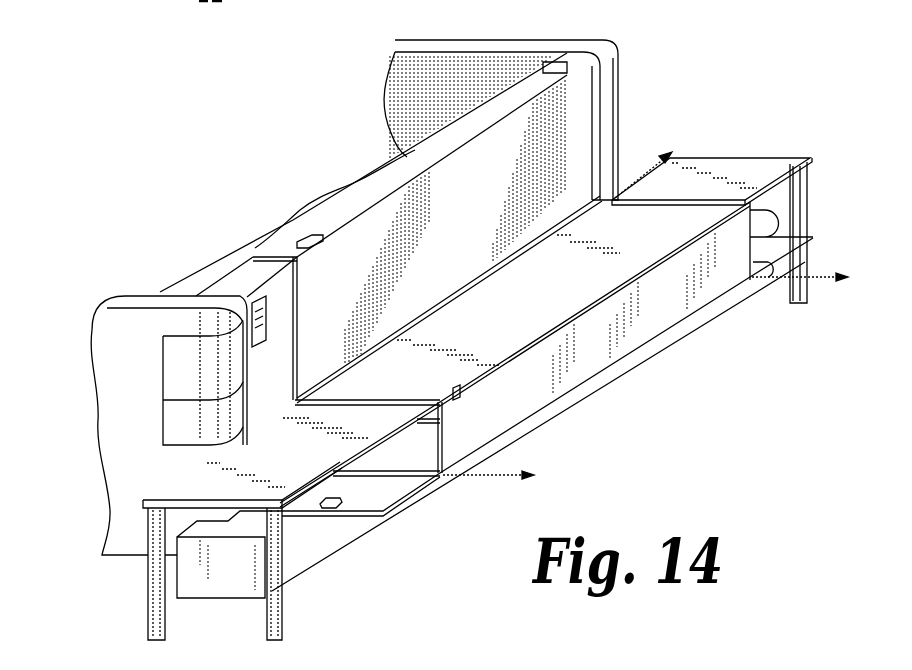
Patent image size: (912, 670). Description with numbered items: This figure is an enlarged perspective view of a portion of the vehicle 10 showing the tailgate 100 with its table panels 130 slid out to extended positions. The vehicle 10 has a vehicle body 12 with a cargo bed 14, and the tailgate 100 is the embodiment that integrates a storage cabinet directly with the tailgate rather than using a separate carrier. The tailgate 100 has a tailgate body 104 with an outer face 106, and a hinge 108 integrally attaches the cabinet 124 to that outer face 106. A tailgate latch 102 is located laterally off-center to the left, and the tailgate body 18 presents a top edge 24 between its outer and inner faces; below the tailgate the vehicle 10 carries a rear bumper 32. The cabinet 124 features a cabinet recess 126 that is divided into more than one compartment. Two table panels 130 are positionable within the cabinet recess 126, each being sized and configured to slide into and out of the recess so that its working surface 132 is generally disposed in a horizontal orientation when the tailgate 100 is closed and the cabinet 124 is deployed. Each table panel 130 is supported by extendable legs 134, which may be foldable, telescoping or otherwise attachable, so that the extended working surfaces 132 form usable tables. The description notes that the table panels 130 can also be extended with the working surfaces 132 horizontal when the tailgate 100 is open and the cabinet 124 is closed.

The vehicle 10 is at (428, 42).
The vehicle body 12 is at (476, 42).
The cargo bed 14 is at (337, 97).
The tailgate body 18 is at (265, 382).
The top edge 24 is at (347, 212).
The rear bumper 32 is at (235, 575).
The tailgate 100 is at (468, 136).
The tailgate latch 102 is at (263, 300).
The tailgate body 104 is at (593, 101).
The outer face 106 is at (593, 133).
The hinge 108 is at (467, 287).
The cabinet 124 is at (580, 363).
The cabinet recess 126 is at (403, 460).
The table panels 130 is at (220, 487).
The working surface 132 is at (180, 494).
The extendable legs 134 is at (152, 630).